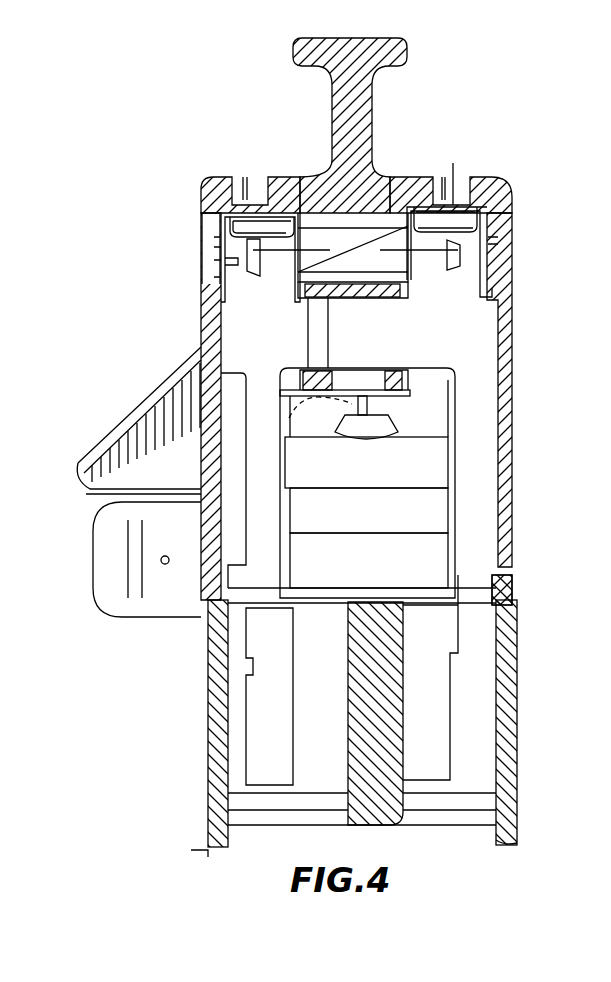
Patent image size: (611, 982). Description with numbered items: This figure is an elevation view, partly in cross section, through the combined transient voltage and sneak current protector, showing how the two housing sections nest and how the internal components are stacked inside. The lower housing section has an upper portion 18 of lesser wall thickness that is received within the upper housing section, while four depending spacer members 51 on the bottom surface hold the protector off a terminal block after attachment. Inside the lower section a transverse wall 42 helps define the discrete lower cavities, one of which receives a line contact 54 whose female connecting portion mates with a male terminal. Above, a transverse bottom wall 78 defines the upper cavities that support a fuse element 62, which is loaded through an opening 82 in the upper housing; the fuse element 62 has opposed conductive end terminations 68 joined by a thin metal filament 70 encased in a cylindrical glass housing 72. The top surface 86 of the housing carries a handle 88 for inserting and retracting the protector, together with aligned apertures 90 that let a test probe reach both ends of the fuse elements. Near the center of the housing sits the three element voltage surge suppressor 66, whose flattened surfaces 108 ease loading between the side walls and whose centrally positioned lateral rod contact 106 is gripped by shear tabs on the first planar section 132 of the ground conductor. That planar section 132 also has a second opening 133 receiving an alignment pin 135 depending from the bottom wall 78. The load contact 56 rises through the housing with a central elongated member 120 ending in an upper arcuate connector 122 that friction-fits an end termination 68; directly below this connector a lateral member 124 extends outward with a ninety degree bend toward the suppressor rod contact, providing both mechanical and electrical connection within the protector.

The upper portion 18 is at (501, 601).
The transverse wall 42 is at (393, 686).
The spacer member 51 is at (514, 848).
The line contact 54 is at (233, 343).
The load contact 56 is at (474, 439).
The fuse element 62 is at (437, 168).
The voltage surge suppressor 66 is at (437, 553).
The end termination 68 is at (280, 274).
The metal filament 70 is at (380, 200).
The glass housing 72 is at (397, 263).
The transverse bottom wall 78 is at (380, 296).
The opening 82 is at (200, 232).
The top surface 86 is at (352, 250).
The handle 88 is at (394, 64).
The aperture 90 is at (260, 184).
The lateral rod contact 106 is at (372, 411).
The flattened surface 108 is at (437, 497).
The central elongated member 120 is at (487, 503).
The upper arcuate connector 122 is at (468, 220).
The lateral member 124 is at (462, 337).
The first planar section 132 is at (300, 370).
The second opening 133 is at (300, 423).
The alignment pin 135 is at (358, 370).